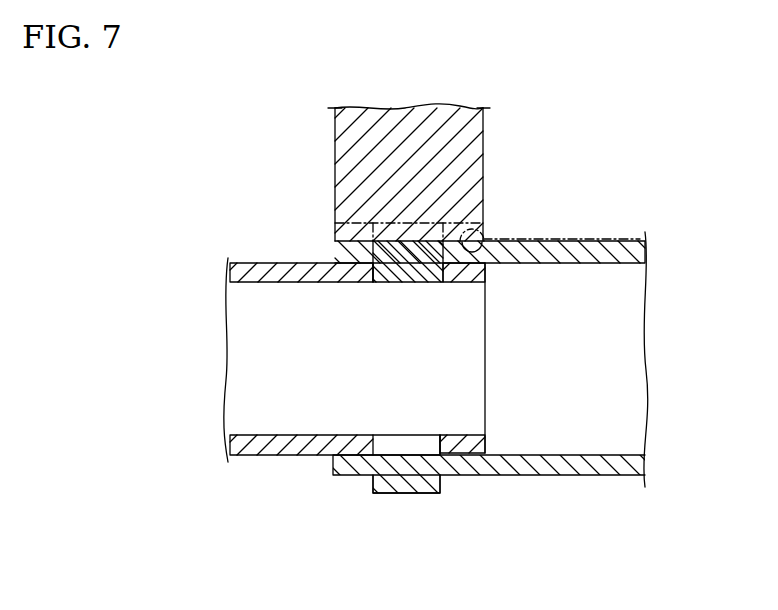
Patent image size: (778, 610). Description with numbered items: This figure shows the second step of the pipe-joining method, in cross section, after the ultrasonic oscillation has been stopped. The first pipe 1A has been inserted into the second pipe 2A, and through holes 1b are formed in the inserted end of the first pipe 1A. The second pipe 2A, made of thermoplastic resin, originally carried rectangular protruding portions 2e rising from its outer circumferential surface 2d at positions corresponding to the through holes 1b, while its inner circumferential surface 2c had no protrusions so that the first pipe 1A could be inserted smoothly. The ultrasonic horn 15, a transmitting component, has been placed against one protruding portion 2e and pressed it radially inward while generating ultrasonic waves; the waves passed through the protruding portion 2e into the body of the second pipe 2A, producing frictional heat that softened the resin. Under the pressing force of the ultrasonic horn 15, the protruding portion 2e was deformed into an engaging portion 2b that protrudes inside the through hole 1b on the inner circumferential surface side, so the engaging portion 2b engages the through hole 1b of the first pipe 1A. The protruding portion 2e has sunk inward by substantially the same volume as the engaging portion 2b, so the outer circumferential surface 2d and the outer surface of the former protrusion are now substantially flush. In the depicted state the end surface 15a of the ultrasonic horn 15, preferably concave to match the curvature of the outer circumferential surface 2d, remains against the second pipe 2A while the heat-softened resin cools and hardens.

The ultrasonic horn 15 is at (473, 142).
The end surface 15a is at (473, 213).
The outer circumferential surface 2d is at (570, 240).
The inner circumferential surface 2c is at (614, 266).
The protruding portion 2e is at (390, 222).
The through hole 1b is at (380, 273).
The engaging portion 2b is at (404, 282).
The first pipe 1A is at (250, 452).
The second pipe 2A is at (545, 474).